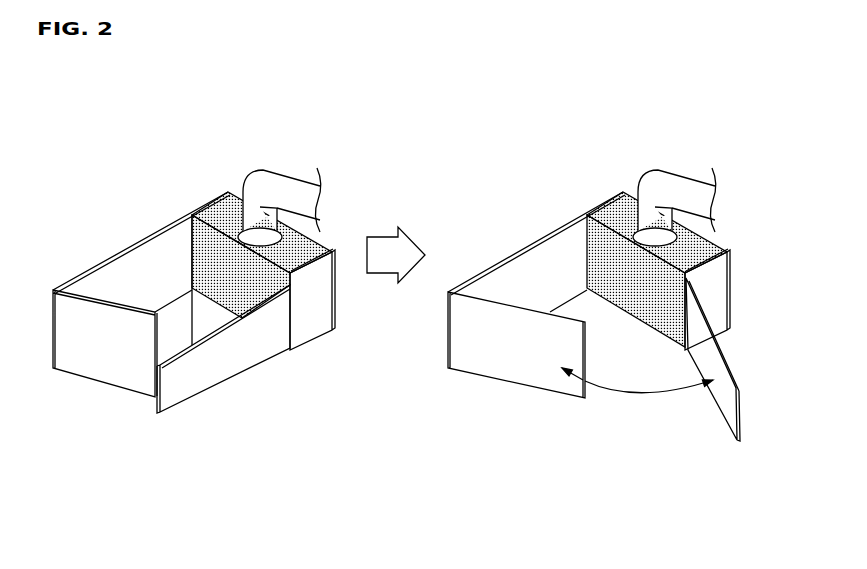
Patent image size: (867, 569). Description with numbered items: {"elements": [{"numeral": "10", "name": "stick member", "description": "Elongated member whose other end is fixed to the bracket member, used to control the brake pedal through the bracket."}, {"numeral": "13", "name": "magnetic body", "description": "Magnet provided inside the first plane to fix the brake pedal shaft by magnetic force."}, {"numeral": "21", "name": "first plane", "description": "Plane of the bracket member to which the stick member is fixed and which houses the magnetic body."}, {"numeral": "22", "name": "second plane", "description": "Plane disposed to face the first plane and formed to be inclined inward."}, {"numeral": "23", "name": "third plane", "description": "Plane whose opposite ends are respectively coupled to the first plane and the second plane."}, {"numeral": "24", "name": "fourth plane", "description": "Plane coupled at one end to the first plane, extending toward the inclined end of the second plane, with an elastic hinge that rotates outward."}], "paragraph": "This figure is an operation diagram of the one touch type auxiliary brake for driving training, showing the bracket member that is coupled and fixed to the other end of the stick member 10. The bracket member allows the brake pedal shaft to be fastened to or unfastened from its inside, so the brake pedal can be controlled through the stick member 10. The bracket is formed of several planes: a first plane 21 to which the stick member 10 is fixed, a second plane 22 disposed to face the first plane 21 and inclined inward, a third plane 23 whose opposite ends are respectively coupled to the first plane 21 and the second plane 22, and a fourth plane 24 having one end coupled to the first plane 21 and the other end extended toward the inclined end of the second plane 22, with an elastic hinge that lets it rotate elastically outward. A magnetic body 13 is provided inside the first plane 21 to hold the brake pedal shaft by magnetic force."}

The pipe 10 is at (293, 182).
The housing block 13 is at (218, 197).
The end plate 21 is at (334, 289).
The front wall 22 is at (105, 383).
The side wall 23 is at (140, 238).
The door plate 24 is at (225, 378).